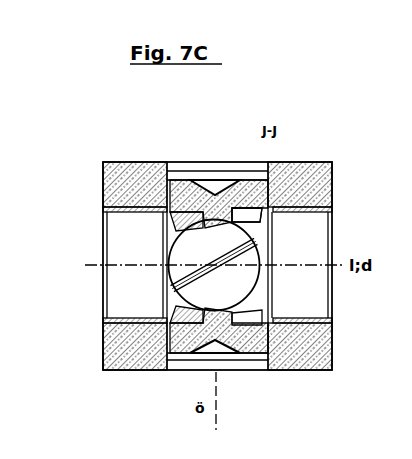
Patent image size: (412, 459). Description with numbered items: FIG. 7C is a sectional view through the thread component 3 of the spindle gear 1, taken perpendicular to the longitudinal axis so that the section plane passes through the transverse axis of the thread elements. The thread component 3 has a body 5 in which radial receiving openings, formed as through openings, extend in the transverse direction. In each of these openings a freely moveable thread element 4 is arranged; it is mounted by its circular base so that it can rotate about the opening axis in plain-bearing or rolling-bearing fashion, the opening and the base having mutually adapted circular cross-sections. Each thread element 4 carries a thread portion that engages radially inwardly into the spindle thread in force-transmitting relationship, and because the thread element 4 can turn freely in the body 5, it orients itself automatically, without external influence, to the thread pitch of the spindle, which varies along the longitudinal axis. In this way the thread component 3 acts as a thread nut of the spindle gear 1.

The spindle gear 1 is at (176, 164).
The thread component 3 is at (100, 142).
The thread element 4 is at (232, 323).
The body 5 is at (92, 160).